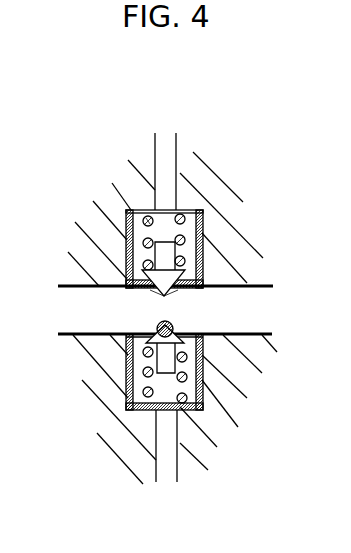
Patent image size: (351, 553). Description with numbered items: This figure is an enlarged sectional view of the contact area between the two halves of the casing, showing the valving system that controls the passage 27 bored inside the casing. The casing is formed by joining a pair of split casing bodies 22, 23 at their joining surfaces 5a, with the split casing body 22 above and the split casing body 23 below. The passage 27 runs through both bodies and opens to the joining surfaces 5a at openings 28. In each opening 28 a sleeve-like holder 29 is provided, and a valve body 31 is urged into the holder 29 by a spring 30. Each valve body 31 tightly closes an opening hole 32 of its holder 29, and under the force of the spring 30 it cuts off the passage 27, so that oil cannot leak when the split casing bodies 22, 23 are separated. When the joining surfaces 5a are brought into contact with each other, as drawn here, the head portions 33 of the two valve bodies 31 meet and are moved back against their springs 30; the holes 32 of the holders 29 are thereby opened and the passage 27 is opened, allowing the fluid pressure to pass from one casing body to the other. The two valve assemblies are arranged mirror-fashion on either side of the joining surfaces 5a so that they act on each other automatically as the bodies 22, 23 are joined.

The joining surfaces 5a is at (262, 288).
The split casing body 22 is at (262, 188).
The split casing body 23 is at (248, 459).
The passage 27 is at (160, 152).
The opening 28 is at (153, 207).
The sleeve-like holder 29 is at (202, 221).
The spring 30 is at (202, 257).
The valve body 31 is at (165, 258).
The opening hole 32 is at (155, 289).
The head portion 33 is at (172, 289).